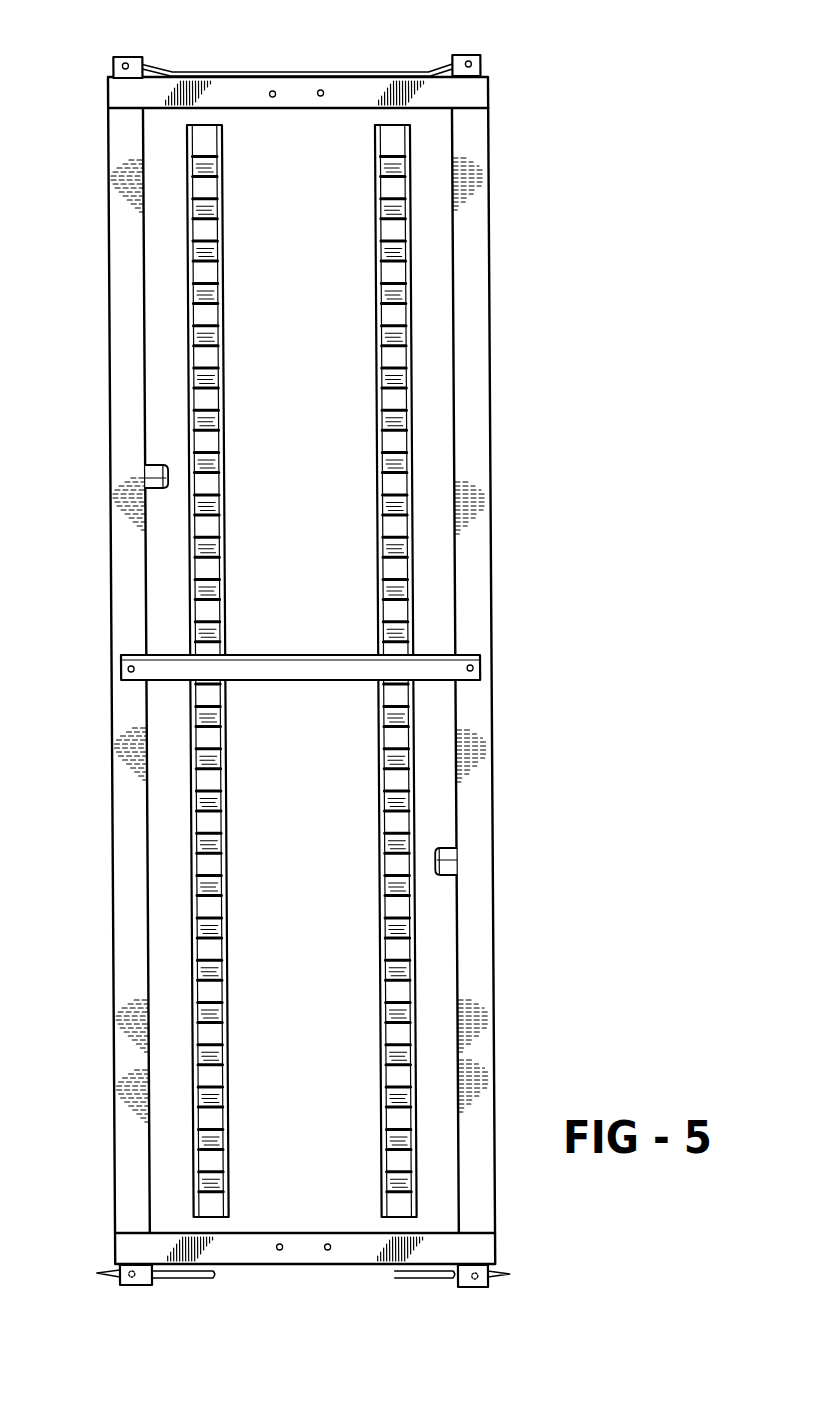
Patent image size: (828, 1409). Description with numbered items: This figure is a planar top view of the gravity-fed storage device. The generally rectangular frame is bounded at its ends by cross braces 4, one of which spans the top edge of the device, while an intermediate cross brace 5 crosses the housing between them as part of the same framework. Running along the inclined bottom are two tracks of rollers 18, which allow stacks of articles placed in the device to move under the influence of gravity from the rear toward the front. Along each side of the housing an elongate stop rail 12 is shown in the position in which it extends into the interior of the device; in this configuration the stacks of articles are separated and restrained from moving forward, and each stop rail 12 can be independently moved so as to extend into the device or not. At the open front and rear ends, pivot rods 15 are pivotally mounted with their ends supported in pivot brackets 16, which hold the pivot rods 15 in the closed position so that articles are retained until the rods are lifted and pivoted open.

The cross brace 4 is at (290, 86).
The intermediate cross brace 5 is at (437, 655).
The stop rail 12 is at (152, 465).
The pivot rod 15 is at (235, 75).
The pivot bracket 16 is at (113, 66).
The track of rollers 18 is at (226, 1075).